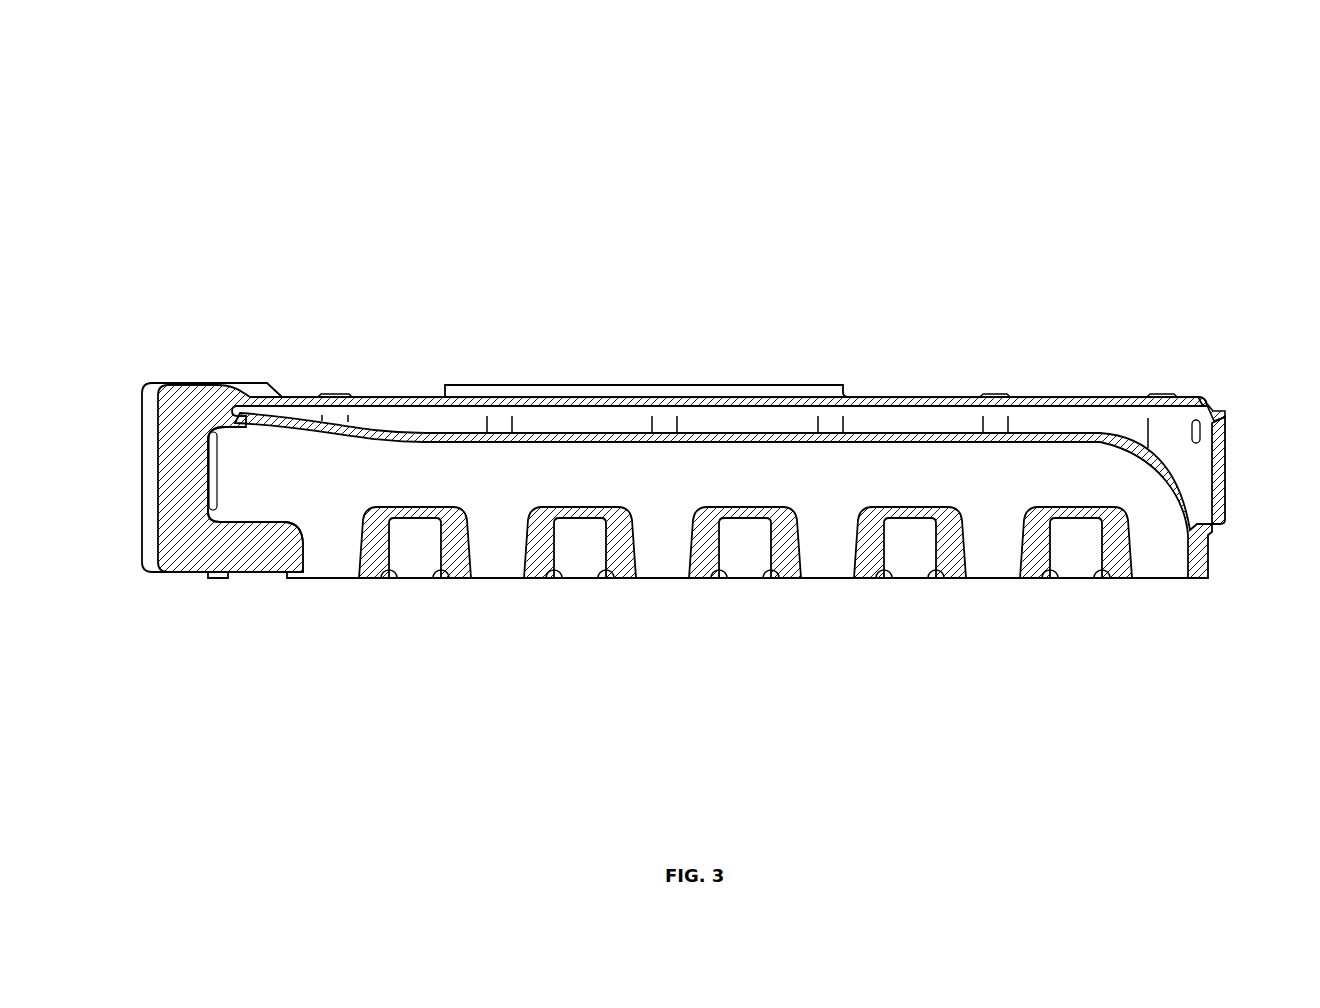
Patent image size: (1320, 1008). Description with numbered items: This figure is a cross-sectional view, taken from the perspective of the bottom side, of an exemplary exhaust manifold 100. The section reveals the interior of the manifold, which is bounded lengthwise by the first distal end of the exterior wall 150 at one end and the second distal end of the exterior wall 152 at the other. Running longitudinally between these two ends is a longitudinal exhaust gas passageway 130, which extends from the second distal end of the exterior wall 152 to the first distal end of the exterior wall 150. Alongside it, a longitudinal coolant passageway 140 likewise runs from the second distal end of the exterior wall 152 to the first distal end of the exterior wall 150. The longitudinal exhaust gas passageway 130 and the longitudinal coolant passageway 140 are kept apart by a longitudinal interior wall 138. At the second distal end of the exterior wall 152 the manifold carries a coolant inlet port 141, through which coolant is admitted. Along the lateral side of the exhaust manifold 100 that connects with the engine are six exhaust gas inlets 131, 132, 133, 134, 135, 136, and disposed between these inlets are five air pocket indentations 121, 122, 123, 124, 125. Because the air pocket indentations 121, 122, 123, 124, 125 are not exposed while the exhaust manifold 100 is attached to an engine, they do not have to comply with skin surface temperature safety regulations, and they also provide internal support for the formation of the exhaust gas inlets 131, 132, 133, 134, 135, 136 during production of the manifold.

The exhaust manifold 100 is at (190, 136).
The first distal end of the exterior wall 150 is at (148, 385).
The longitudinal exhaust gas passageway 130 is at (537, 470).
The longitudinal coolant passageway 140 is at (733, 423).
The longitudinal interior wall 138 is at (887, 440).
The coolant inlet port 141 is at (1225, 467).
The second distal end of the exterior wall 152 is at (1222, 411).
The air pocket indentation 121 is at (422, 565).
The air pocket indentation 122 is at (580, 565).
The air pocket indentation 123 is at (747, 563).
The air pocket indentation 124 is at (910, 565).
The air pocket indentation 125 is at (1085, 565).
The exhaust gas inlet 131 is at (338, 564).
The exhaust gas inlet 132 is at (498, 563).
The exhaust gas inlet 133 is at (663, 563).
The exhaust gas inlet 134 is at (829, 563).
The exhaust gas inlet 135 is at (972, 595).
The exhaust gas inlet 136 is at (1163, 564).